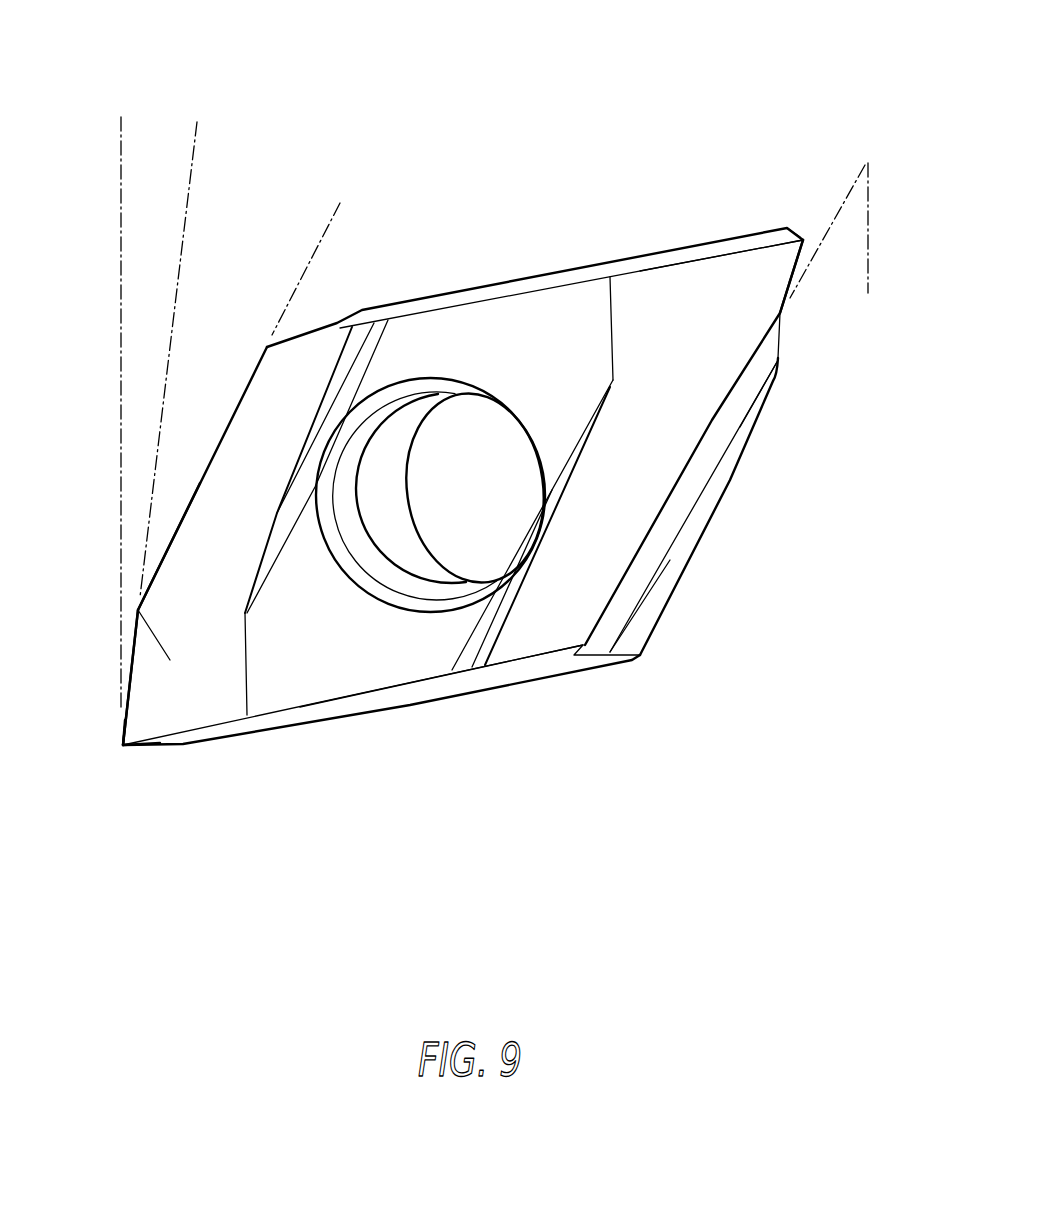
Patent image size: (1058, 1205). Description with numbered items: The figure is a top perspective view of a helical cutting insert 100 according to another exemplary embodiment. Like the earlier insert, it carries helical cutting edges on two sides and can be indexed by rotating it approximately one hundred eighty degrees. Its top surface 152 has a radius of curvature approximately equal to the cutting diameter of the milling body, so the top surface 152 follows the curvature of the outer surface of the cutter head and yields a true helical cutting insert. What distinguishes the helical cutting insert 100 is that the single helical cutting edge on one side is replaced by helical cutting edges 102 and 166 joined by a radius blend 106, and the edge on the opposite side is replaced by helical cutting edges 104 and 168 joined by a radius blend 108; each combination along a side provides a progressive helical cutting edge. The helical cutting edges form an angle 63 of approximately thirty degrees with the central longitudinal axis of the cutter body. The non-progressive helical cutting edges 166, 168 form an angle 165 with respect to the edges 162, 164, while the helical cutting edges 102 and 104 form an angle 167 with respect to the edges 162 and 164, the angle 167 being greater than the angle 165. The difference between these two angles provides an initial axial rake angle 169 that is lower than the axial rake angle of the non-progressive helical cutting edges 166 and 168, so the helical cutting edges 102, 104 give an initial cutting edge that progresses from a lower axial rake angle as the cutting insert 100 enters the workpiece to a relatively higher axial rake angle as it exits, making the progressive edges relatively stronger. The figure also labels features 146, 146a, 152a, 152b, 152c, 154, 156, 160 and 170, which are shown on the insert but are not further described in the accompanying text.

The helical cutting insert 100 is at (400, 92).
The angle 63 is at (818, 185).
The helical cutting edge 102 is at (796, 276).
The helical cutting edge 104 is at (127, 698).
The radius blend 106 is at (782, 313).
The radius blend 108 is at (137, 610).
The central hole 146 is at (457, 449).
The counterbore of hole 146a is at (345, 555).
The top surface 152 is at (510, 329).
The rake face lower portion 152a is at (280, 655).
The rake face upper portion 152b is at (737, 278).
The rake face corner portion 152c is at (167, 668).
The upper land 154 is at (645, 254).
The lower land 156 is at (425, 709).
The side flank face 160 is at (715, 515).
The edge 162 is at (593, 278).
The edge 164 is at (523, 658).
The angle 165 is at (341, 223).
The helical cutting edge 166 is at (748, 381).
The angle 167 is at (469, 298).
The helical cutting edge 168 is at (162, 558).
The initial axial rake angle 169 is at (194, 140).
The lower flank portion 170 is at (643, 603).